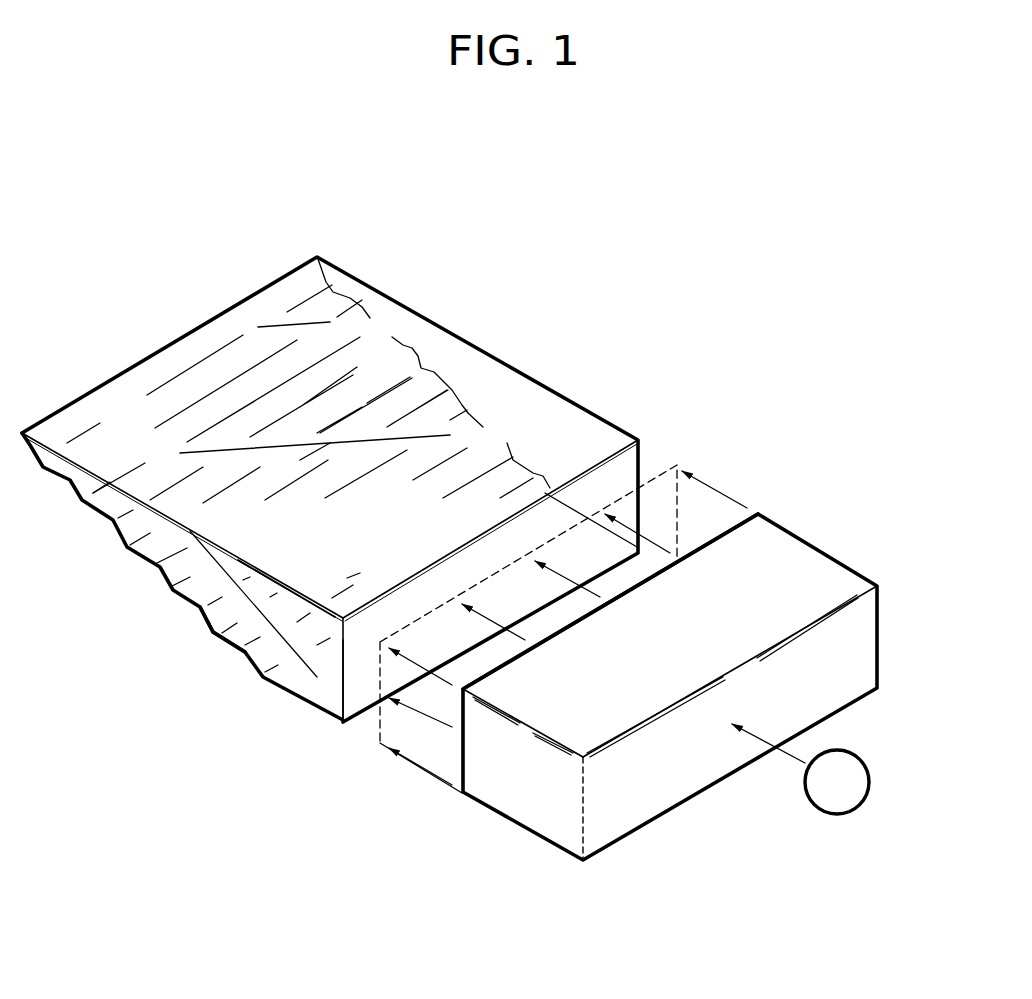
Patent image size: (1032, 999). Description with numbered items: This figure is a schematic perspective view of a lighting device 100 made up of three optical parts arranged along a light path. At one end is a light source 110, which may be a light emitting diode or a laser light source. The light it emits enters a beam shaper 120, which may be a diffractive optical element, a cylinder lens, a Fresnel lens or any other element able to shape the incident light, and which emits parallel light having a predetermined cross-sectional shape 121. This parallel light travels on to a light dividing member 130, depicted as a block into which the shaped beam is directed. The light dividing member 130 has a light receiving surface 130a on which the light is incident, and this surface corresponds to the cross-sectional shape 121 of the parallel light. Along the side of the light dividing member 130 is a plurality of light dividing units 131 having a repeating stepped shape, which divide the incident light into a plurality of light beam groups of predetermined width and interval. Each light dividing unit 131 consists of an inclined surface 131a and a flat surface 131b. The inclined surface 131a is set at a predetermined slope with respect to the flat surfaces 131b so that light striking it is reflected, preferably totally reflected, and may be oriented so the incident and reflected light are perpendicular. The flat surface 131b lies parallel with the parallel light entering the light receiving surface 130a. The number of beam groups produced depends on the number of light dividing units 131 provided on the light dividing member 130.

The lighting device 100 is at (757, 374).
The light source 110 is at (850, 772).
The beam shaper 120 is at (762, 537).
The cross-sectional shape 121 is at (410, 727).
The light dividing member 130 is at (576, 427).
The light receiving surface 130a is at (355, 697).
The light dividing unit 131 is at (247, 748).
The inclined surface 131a is at (213, 632).
The flat surface 131b is at (245, 653).